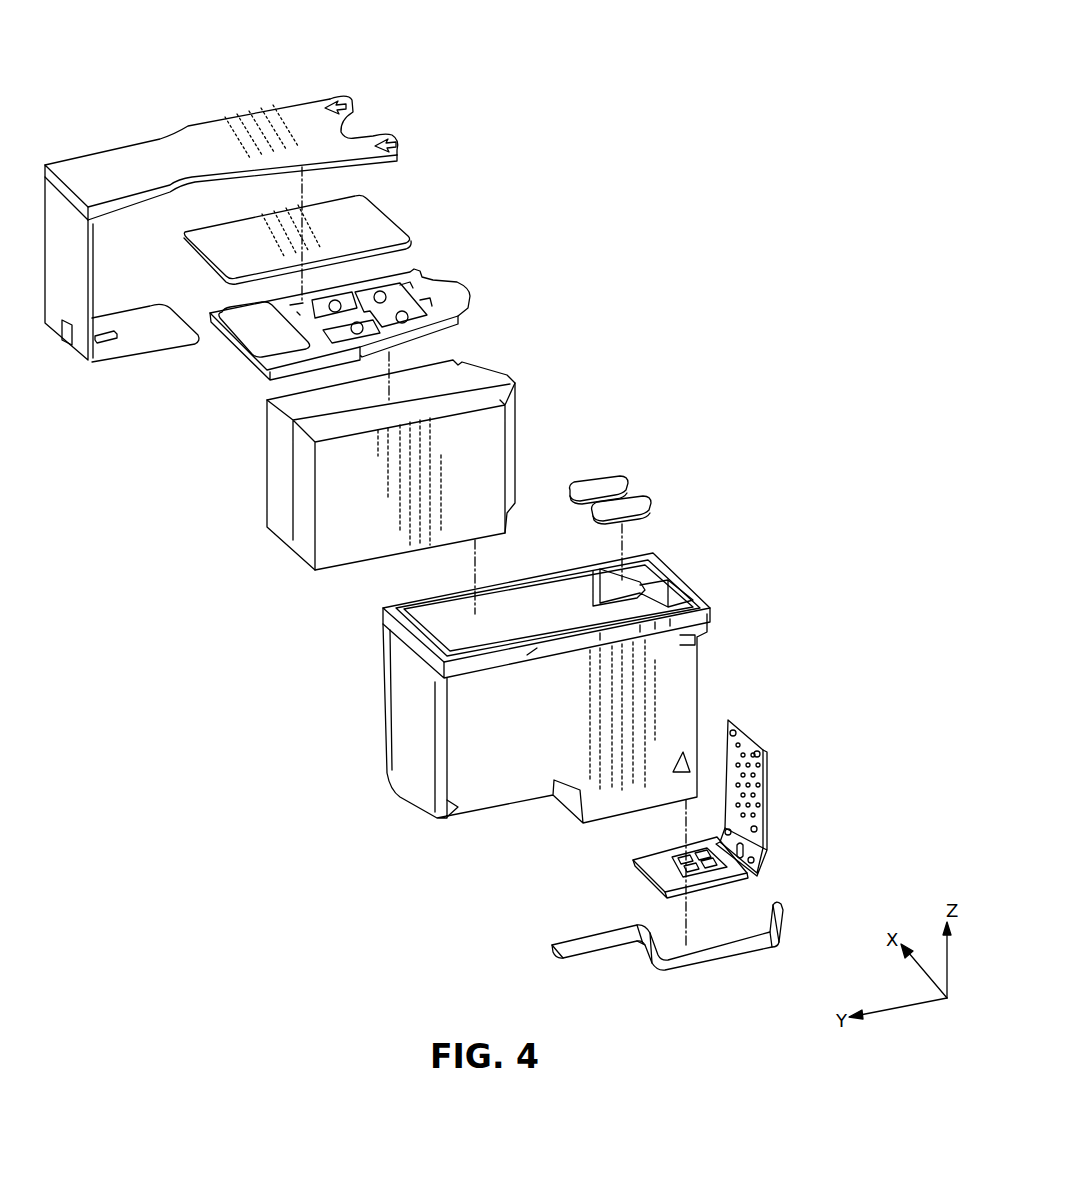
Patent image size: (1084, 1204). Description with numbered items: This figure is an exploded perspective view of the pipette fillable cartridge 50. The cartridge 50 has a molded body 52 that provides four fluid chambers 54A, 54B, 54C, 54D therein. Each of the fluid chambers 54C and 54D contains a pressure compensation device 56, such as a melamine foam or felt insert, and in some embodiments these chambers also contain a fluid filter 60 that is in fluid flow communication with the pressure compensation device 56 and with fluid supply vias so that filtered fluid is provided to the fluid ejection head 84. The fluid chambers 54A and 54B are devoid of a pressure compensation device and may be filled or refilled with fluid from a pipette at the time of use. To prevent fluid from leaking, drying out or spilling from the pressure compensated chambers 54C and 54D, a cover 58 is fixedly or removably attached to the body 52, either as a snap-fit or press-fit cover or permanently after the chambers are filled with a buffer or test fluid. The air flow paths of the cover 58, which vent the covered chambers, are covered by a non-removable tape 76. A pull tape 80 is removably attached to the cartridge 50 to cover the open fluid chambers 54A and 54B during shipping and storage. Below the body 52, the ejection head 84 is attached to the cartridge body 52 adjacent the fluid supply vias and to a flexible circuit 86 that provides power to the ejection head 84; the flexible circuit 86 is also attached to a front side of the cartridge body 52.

The cartridge 50 is at (235, 58).
The pull tape 80 is at (340, 137).
The non-removable tape 76 is at (377, 231).
The cover 58 is at (447, 297).
The pressure compensation device 56 is at (280, 463).
The fluid filter 60 is at (605, 490).
The molded body 52 is at (680, 703).
The fluid chamber 54A is at (637, 562).
The fluid chamber 54B is at (675, 592).
The fluid chamber 54C is at (432, 620).
The fluid chamber 54D is at (476, 650).
The flexible circuit 86 is at (753, 828).
The fluid ejection head 84 is at (740, 873).